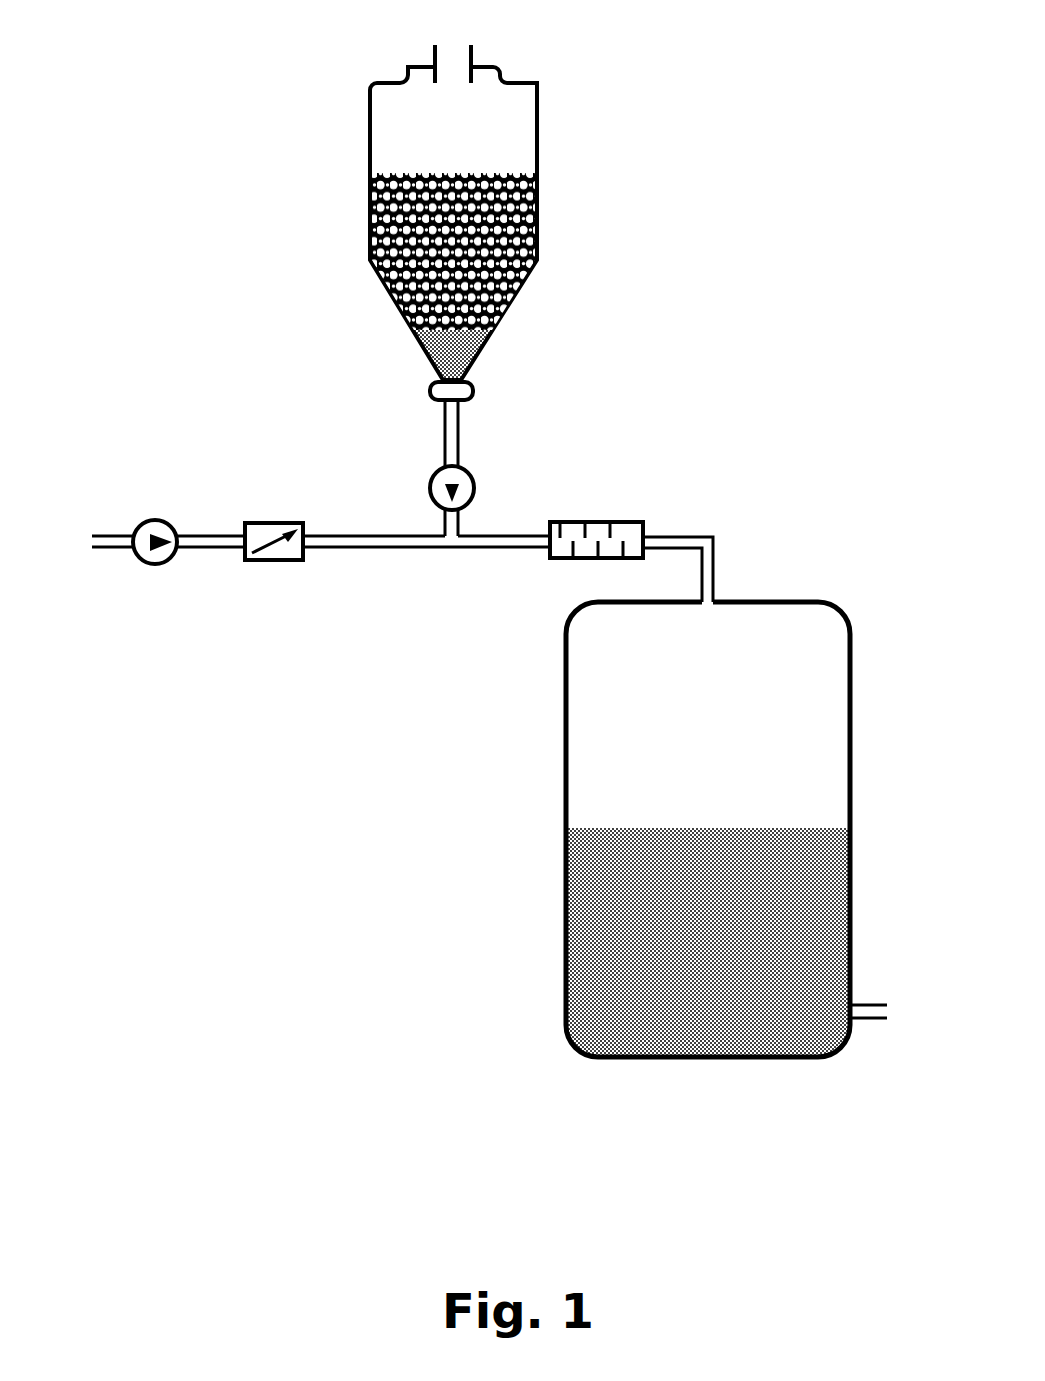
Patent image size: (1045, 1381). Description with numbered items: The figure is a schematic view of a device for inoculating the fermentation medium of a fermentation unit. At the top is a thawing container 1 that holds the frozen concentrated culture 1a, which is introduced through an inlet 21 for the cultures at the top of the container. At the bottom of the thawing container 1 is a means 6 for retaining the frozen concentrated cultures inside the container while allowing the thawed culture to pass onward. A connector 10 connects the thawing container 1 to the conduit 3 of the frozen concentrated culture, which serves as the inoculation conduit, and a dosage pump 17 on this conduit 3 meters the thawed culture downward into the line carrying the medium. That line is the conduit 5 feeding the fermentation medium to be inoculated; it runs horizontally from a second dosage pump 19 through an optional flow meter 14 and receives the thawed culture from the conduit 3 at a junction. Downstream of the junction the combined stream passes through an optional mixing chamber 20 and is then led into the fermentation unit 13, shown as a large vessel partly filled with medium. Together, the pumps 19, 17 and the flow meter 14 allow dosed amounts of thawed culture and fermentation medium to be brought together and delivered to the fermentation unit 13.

The thawing container 1 is at (538, 188).
The frozen concentrated culture 1a is at (535, 237).
The inlet for the cultures 21 is at (453, 62).
The means for retaining the frozen concentrated cultures 6 is at (478, 333).
The connector 10 is at (474, 392).
The conduit of the frozen concentrated culture 3 is at (458, 432).
The dosage pump 17 is at (475, 488).
The conduit feeding the fermentation medium 5 is at (393, 549).
The dosage pump 19 is at (153, 520).
The flow meter 14 is at (275, 562).
The mixing chamber 20 is at (595, 520).
The fermentation unit 13 is at (563, 730).